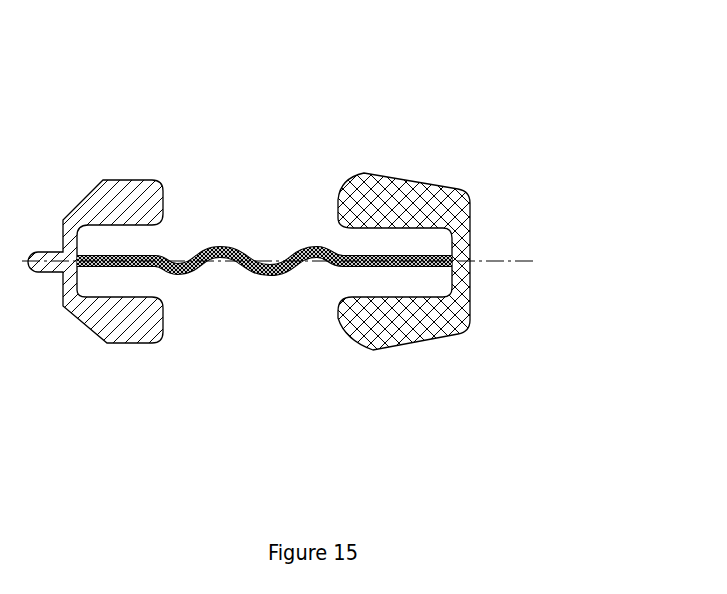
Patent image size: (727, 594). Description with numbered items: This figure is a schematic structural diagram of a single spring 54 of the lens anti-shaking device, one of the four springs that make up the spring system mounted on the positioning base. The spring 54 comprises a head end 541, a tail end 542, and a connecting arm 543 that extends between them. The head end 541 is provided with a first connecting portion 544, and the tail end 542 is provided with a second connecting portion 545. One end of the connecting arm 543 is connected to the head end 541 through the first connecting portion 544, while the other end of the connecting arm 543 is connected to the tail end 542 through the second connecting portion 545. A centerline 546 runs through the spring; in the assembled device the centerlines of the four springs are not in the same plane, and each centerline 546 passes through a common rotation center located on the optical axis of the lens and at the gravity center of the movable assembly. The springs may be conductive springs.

The spring 54 is at (397, 180).
The head end 541 is at (90, 193).
The tail end 542 is at (472, 200).
The connecting arm 543 is at (257, 278).
The first connecting portion 544 is at (120, 253).
The second connecting portion 545 is at (357, 268).
The centerline 546 is at (518, 260).